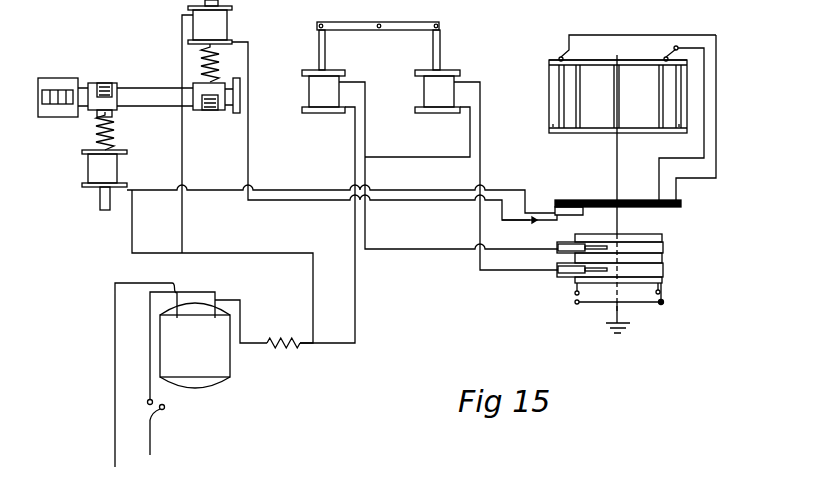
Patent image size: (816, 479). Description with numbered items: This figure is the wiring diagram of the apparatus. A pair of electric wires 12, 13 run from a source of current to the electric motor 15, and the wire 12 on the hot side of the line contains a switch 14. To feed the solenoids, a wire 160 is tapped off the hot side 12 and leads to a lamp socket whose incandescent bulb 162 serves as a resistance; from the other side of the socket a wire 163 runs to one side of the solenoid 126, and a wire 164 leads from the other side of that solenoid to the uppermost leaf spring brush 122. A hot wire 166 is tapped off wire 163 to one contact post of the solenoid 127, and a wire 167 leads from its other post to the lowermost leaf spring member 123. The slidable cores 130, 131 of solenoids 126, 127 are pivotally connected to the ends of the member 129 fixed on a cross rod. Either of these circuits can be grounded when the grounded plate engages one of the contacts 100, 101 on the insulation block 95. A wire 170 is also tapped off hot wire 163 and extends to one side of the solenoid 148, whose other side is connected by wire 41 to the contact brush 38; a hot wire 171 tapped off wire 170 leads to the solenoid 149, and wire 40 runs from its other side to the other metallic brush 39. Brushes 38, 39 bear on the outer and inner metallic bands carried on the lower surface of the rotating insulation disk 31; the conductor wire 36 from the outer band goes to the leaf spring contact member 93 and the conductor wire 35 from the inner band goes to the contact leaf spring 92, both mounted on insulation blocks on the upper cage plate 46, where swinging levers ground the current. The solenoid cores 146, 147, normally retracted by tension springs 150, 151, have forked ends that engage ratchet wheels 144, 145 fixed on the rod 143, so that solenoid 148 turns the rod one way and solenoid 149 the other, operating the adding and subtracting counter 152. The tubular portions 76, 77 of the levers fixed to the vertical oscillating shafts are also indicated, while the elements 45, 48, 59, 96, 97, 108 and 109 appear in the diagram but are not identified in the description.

The electric wire 12 is at (150, 352).
The electric wire 13 is at (115, 435).
The switch 14 is at (165, 408).
The electric motor 15 is at (195, 345).
The insulation disk 31 is at (615, 207).
The conductor wire 35 is at (704, 143).
The conductor wire 36 is at (718, 165).
The metallic brush 38 is at (530, 212).
The metallic brush 39 is at (534, 221).
The wire 40 is at (290, 199).
The wire 41 is at (198, 190).
The housing 45 is at (639, 134).
The upper cage plate 46 is at (632, 60).
The partition 48 is at (578, 107).
The shaft 59 is at (617, 193).
The tubular portion 76 is at (557, 120).
The tubular portion 77 is at (683, 120).
The metallic contact leaf spring 92 is at (560, 55).
The leaf spring contact member 93 is at (679, 44).
The insulation block 95 is at (664, 258).
The contact disc 96 is at (664, 247).
The contact disc 97 is at (664, 270).
The contact 100 is at (575, 296).
The contact 101 is at (661, 292).
The terminal 108 is at (575, 305).
The conductor 109 is at (663, 303).
The uppermost leaf spring brush 122 is at (572, 246).
The lowermost leaf spring member 123 is at (563, 274).
The solenoid 126 is at (323, 91).
The solenoid 127 is at (437, 91).
The member 129 is at (403, 30).
The slidable core 130 is at (325, 52).
The slidable core 131 is at (440, 45).
The rod 143 is at (147, 88).
The ratchet wheel 144 is at (103, 83).
The ratchet wheel 145 is at (210, 110).
The solenoid core 146 is at (118, 108).
The solenoid core 147 is at (216, 105).
The solenoid 148 is at (88, 171).
The solenoid 149 is at (227, 24).
The tension spring 150 is at (97, 136).
The tension spring 151 is at (222, 59).
The adding and subtracting counter 152 is at (46, 117).
The wire 160 is at (246, 335).
The incandescent bulb 162 is at (272, 350).
The wire 163 is at (354, 137).
The wire 164 is at (366, 102).
The hot wire 166 is at (412, 157).
The wire 167 is at (482, 151).
The wire 170 is at (242, 254).
The hot wire 171 is at (182, 227).